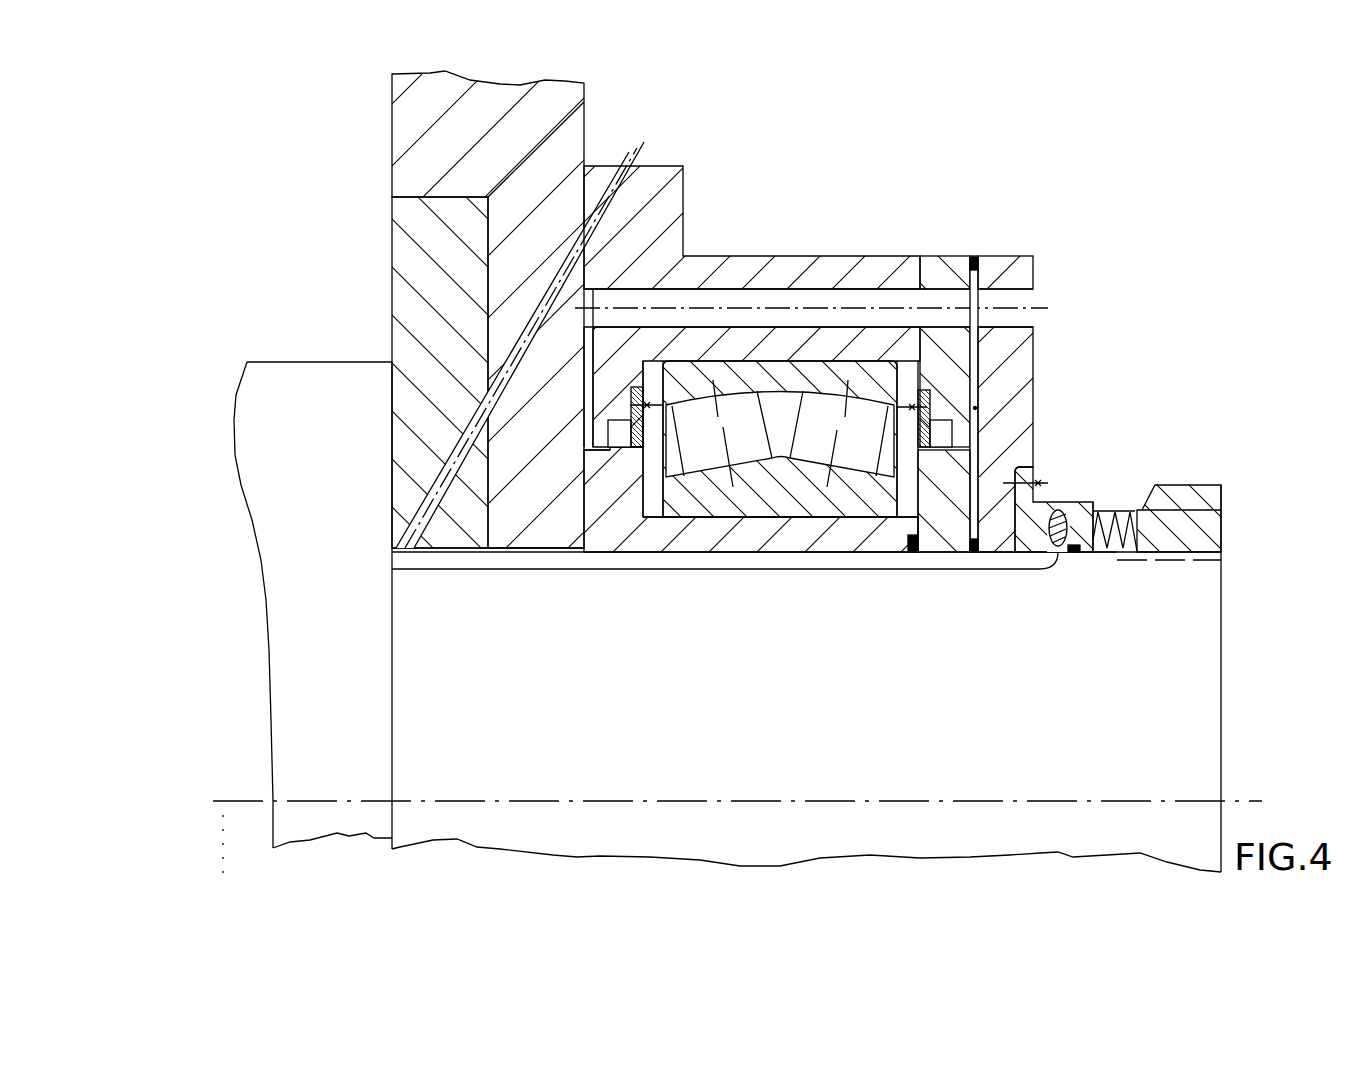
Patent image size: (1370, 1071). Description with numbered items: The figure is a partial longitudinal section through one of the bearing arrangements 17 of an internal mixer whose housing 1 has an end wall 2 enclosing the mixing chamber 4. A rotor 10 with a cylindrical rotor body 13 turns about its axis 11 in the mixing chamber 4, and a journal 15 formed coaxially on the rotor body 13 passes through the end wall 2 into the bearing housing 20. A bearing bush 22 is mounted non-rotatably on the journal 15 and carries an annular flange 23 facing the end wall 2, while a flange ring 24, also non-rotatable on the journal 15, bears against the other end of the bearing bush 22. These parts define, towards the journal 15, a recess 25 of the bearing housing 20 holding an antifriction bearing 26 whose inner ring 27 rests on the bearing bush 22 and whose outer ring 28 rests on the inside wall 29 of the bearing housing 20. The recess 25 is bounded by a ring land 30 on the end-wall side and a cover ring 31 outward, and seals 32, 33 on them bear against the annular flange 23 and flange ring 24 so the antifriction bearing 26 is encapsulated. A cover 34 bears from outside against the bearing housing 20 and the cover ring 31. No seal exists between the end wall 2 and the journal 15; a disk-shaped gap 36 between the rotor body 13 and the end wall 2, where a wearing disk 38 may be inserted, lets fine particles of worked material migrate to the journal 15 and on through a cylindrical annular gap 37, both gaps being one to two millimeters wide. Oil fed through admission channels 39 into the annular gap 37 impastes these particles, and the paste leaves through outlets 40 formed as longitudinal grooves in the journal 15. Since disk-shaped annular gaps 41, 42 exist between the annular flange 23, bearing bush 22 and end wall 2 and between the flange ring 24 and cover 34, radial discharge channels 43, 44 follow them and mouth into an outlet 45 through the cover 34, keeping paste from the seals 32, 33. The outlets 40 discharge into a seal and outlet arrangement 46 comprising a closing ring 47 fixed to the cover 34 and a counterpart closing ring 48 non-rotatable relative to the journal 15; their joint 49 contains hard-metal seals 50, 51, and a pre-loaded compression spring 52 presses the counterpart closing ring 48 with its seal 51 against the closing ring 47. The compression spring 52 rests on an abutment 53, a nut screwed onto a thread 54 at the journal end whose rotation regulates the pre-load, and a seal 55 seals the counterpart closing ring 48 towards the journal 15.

The housing 1 is at (386, 104).
The end wall 2 is at (494, 112).
The mixing chamber 4 is at (300, 266).
The rotor 10 is at (298, 348).
The axis 11 is at (1123, 800).
The rotor body 13 is at (316, 454).
The journal 15 is at (1180, 708).
The bearing arrangement 17 is at (904, 225).
The bearing housing 20 is at (866, 268).
The bearing bush 22 is at (762, 535).
The annular flange 23 is at (610, 497).
The flange ring 24 is at (945, 497).
The recess 25 is at (653, 430).
The antifriction bearing 26 is at (793, 416).
The inner ring 27 is at (713, 497).
The outer ring 28 is at (778, 373).
The inside wall 29 is at (824, 350).
The ring land 30 is at (626, 370).
The cover ring 31 is at (940, 278).
The seal 32 is at (622, 443).
The seal 33 is at (910, 552).
The cover 34 is at (1010, 362).
The gap 36 is at (392, 362).
The annular gap 37 is at (495, 548).
The wearing disk 38 is at (432, 238).
The admission channel 39 is at (618, 170).
The outlet 40 is at (826, 558).
The annular gap 41 is at (582, 548).
The annular gap 42 is at (972, 552).
The radial discharge channel 43 is at (590, 405).
The radial discharge channel 44 is at (975, 408).
The outlet 45 is at (1015, 303).
The seal and outlet arrangement 46 is at (1076, 474).
The closing ring 47 is at (1028, 535).
The counterpart closing ring 48 is at (1083, 510).
The joint 49 is at (1057, 510).
The seal 50 is at (1056, 540).
The seal 51 is at (1092, 554).
The compression spring 52 is at (1113, 513).
The abutment 53 is at (1180, 515).
The thread 54 is at (1175, 560).
The seal 55 is at (1074, 552).